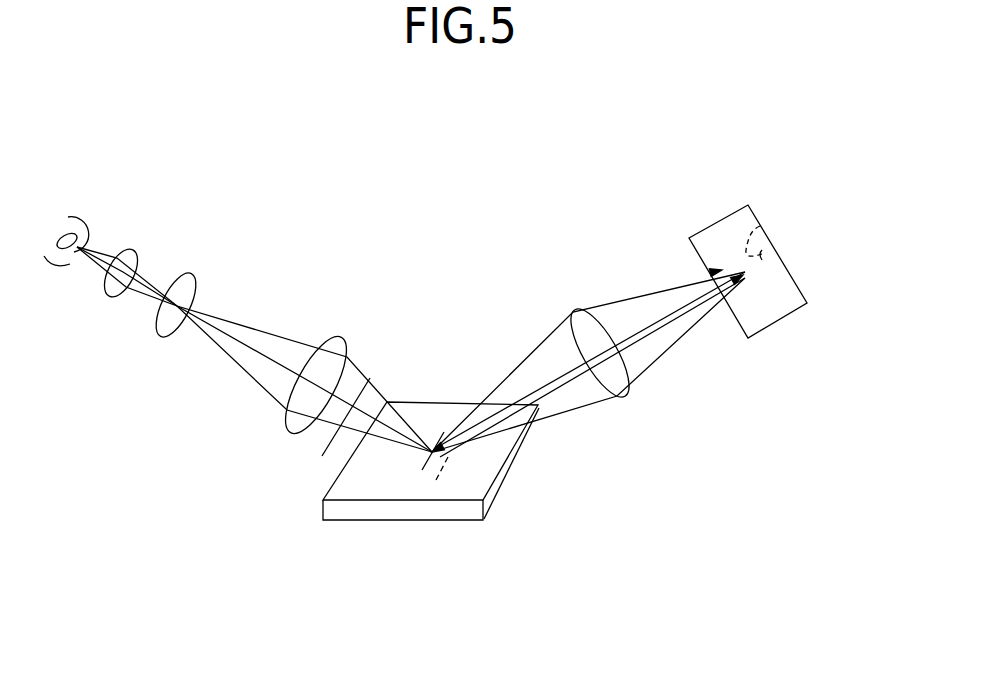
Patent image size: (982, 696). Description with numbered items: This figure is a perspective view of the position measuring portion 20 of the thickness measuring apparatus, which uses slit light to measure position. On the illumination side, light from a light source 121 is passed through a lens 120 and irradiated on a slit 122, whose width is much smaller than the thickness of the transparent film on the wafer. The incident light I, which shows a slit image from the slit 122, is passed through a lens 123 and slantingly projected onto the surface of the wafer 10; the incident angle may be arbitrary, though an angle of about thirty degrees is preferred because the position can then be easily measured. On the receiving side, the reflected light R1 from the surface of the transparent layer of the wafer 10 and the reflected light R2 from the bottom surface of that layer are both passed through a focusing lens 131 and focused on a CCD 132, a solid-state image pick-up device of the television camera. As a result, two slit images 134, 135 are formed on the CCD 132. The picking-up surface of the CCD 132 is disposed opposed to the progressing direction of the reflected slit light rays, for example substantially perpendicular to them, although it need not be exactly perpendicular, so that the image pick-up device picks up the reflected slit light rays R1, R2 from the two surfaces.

The position measuring portion 20 is at (457, 178).
The light source 121 is at (68, 216).
The lens 120 is at (138, 253).
The slit 122 is at (188, 282).
The lens 123 is at (342, 340).
The incident light I is at (370, 381).
The wafer 10 is at (352, 488).
The reflected light R1 is at (522, 368).
The reflected light R2 is at (512, 415).
The focusing lens 131 is at (622, 398).
The CCD 132 is at (775, 325).
The slit image 134 is at (762, 250).
The slit image 135 is at (760, 227).